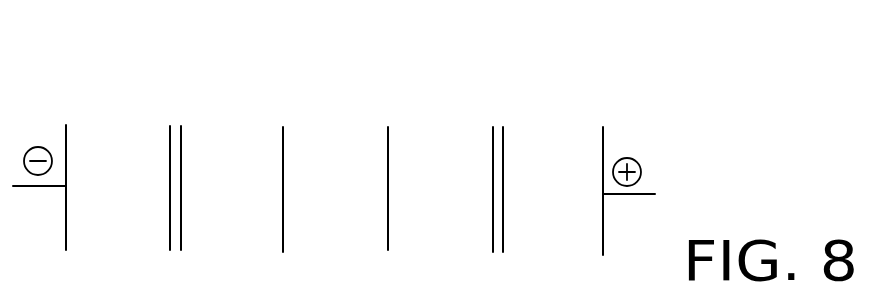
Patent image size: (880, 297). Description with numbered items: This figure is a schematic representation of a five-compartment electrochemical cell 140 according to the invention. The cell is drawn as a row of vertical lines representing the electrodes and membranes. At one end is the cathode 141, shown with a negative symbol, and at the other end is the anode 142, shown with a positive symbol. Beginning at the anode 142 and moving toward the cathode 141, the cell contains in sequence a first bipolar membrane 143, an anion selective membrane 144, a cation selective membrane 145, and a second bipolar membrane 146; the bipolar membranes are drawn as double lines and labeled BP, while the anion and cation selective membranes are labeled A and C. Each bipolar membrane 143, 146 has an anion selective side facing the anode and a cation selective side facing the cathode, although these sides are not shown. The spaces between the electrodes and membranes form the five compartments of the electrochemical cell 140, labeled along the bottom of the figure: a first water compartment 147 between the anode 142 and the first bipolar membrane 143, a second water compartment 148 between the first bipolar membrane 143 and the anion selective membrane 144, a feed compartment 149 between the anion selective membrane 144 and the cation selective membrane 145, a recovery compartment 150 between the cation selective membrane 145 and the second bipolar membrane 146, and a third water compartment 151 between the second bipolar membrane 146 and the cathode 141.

The electrochemical cell 140 is at (665, 40).
The cathode 141 is at (67, 140).
The anode 142 is at (603, 139).
The first bipolar membrane 143 is at (503, 147).
The anion selective membrane 144 is at (388, 147).
The cation selective membrane 145 is at (283, 147).
The second bipolar membrane 146 is at (181, 147).
The first water compartment 147 is at (566, 238).
The second water compartment 148 is at (448, 240).
The feed compartment 149 is at (355, 240).
The recovery compartment 150 is at (230, 233).
The third water compartment 151 is at (127, 232).